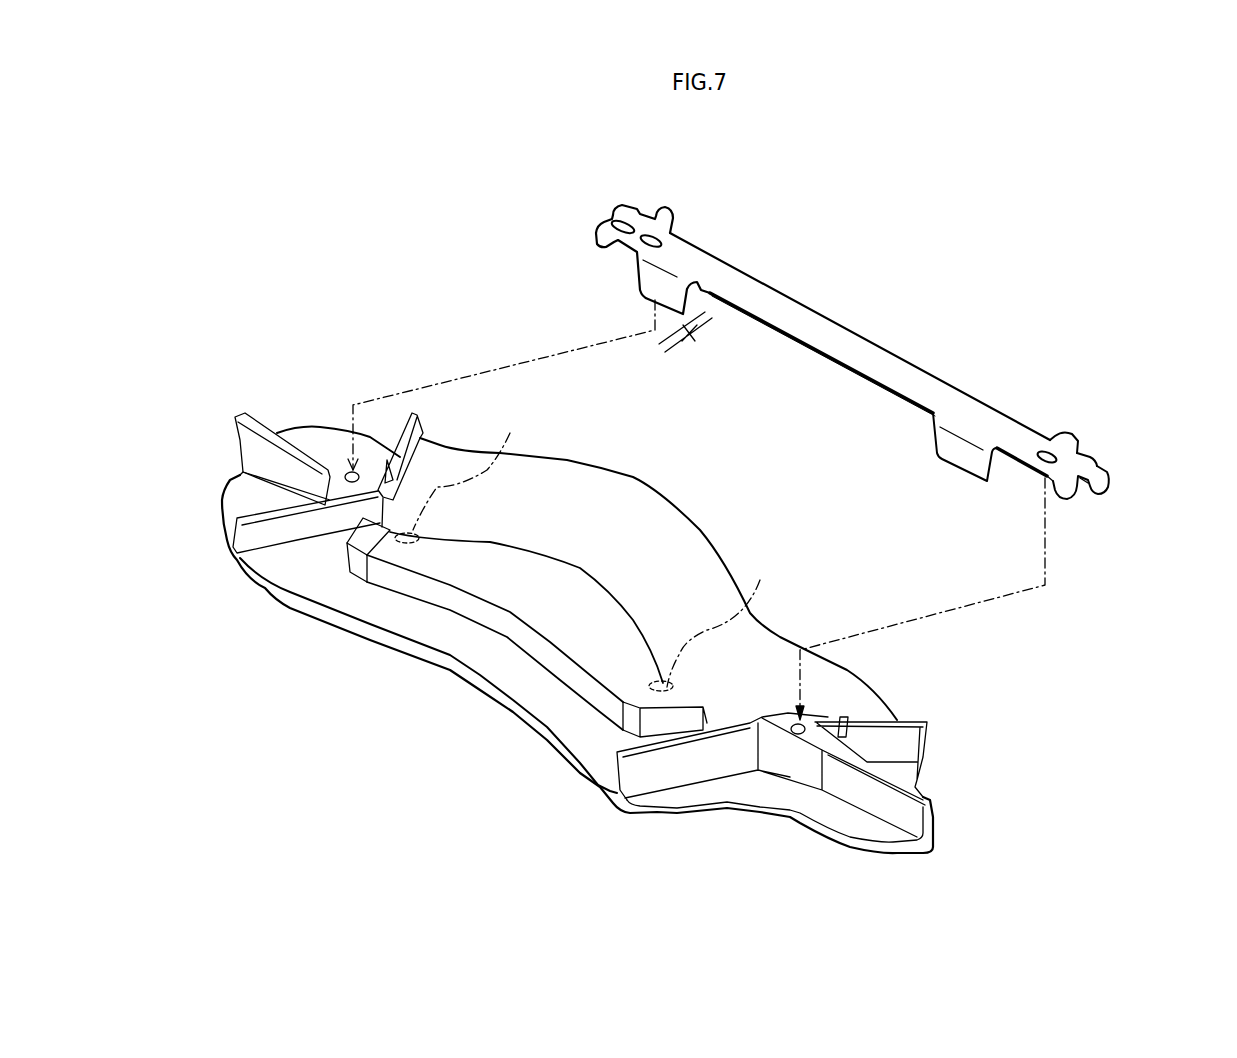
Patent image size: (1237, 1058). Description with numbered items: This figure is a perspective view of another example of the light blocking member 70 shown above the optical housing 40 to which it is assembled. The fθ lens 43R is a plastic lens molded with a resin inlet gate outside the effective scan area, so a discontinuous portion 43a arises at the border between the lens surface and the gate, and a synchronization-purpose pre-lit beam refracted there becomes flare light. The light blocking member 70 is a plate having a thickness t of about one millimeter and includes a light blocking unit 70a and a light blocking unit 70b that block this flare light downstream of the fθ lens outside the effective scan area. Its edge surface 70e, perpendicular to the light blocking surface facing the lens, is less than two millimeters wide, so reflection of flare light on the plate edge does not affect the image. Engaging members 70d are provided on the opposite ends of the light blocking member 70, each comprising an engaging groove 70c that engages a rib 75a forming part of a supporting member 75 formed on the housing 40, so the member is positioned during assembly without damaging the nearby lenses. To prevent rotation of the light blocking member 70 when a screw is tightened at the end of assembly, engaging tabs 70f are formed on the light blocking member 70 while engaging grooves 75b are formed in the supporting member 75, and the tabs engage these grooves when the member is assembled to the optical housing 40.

The optical housing 40 is at (618, 613).
The discontinuous portion 43a is at (733, 477).
The fθ lens 43R is at (500, 602).
The light blocking member 70 is at (848, 347).
The light blocking unit 70a is at (963, 450).
The light blocking unit 70b is at (670, 273).
The engaging groove 70c is at (630, 223).
The engaging member 70d is at (610, 220).
The edge surface 70e is at (710, 293).
The engaging tab 70f is at (657, 213).
The supporting member 75 is at (296, 535).
The rib 75a is at (256, 418).
The engaging groove 75b is at (393, 447).